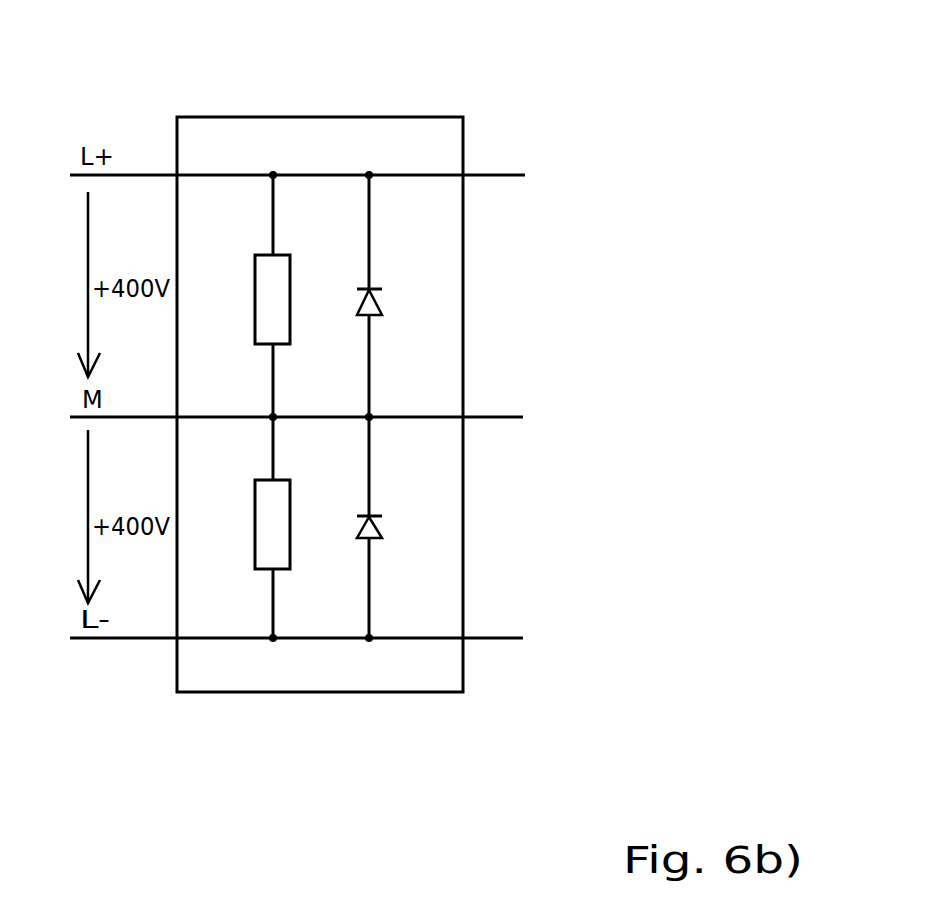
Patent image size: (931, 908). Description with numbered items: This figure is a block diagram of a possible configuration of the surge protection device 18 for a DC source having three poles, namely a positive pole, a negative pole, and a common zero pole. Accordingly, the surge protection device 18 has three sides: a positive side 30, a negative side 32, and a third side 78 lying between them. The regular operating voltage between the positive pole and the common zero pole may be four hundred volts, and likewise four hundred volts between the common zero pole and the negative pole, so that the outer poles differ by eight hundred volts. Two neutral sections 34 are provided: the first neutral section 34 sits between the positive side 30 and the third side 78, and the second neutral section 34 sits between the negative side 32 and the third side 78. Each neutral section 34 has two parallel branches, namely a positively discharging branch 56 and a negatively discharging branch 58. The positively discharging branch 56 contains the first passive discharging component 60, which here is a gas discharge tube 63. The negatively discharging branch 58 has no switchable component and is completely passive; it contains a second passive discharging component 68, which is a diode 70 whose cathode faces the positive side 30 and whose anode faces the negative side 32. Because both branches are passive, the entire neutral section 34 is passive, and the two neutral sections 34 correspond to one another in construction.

The surge protection device 18 is at (426, 359).
The positive side 30 is at (308, 100).
The negative side 32 is at (308, 723).
The third side 78 is at (372, 440).
The neutral section 34 is at (379, 417).
The positively discharging branch 56 is at (178, 417).
The negatively discharging branch 58 is at (522, 406).
The first passive discharging component 60 is at (353, 417).
The gas discharge tube 63 is at (353, 417).
The diode 70 is at (516, 371).
The second passive discharging component 68 is at (516, 371).